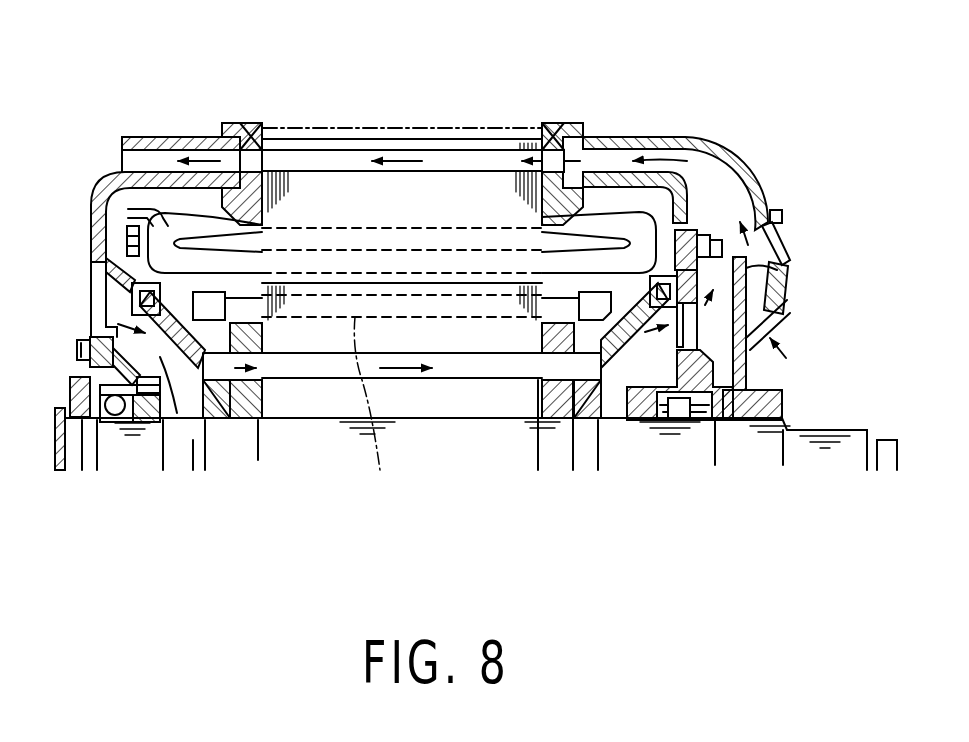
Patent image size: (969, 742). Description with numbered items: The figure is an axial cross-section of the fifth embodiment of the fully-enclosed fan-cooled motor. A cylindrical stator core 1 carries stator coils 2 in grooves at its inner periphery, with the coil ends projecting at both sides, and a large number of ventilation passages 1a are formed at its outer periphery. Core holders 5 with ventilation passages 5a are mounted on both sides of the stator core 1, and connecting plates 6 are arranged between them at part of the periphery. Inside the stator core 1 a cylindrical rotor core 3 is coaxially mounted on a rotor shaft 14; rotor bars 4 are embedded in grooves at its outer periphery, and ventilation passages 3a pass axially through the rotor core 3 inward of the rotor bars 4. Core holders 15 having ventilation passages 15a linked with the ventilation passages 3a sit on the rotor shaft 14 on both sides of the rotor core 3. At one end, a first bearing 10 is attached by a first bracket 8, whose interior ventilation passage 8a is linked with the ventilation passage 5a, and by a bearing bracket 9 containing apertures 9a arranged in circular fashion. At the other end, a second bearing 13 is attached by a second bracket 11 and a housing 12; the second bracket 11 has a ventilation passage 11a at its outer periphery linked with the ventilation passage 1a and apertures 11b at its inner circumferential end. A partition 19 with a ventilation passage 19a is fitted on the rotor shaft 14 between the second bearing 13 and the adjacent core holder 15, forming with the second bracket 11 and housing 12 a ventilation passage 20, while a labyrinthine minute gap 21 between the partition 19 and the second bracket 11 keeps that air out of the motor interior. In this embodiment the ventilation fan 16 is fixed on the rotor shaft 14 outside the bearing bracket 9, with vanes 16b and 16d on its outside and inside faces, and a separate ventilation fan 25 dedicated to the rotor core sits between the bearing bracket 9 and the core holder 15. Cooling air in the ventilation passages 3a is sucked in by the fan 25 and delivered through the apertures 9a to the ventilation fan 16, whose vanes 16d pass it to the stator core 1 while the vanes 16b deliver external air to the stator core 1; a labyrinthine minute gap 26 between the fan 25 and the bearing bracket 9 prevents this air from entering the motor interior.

The stator core 1 is at (464, 136).
The ventilation passage 1a is at (357, 155).
The stator coil 2 is at (657, 211).
The rotor core 3 is at (473, 380).
The ventilation passage 3a is at (440, 380).
The rotor bar 4 is at (367, 409).
The core holder 5 is at (249, 122).
The ventilation passage 5a is at (264, 126).
The connecting plate 6 is at (418, 126).
The first bracket 8 is at (676, 137).
The ventilation passage 8a is at (612, 137).
The bearing bracket 9 is at (620, 425).
The aperture 9a is at (760, 352).
The first bearing 10 is at (672, 420).
The second bracket 11 is at (90, 206).
The ventilation passage 11a is at (173, 137).
The aperture 11b is at (100, 306).
The housing 12 is at (90, 346).
The second bearing 13 is at (113, 425).
The rotor shaft 14 is at (338, 432).
The core holder 15 is at (245, 420).
The ventilation passage 15a is at (277, 423).
The ventilation fan 16 is at (752, 425).
The vane 16b is at (770, 305).
The vane 16d is at (770, 272).
The partition 19 is at (163, 360).
The ventilation passage 19a is at (205, 362).
The ventilation passage 20 is at (150, 425).
The minute gap 21 is at (104, 270).
The ventilation fan dedicated to the rotor core 25 is at (585, 362).
The minute gap 26 is at (697, 233).